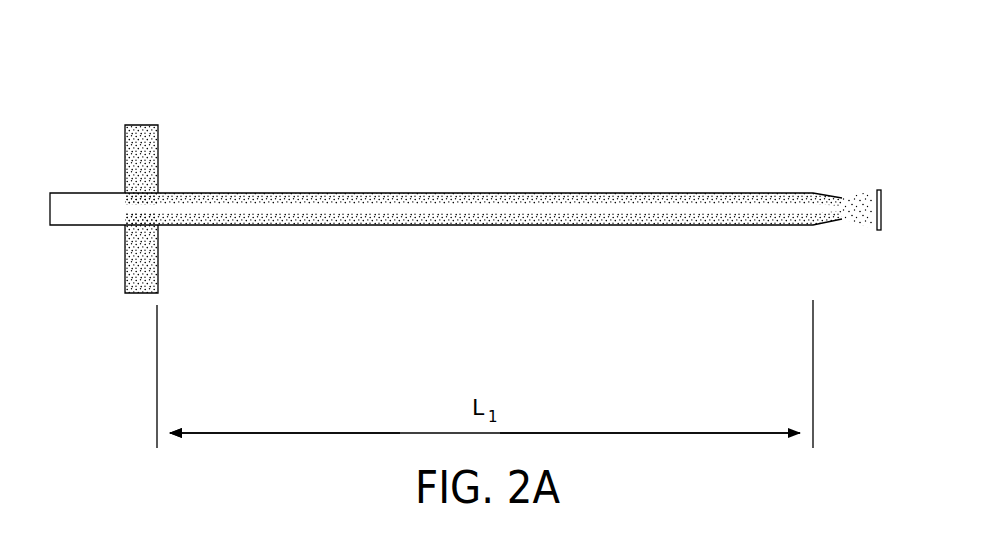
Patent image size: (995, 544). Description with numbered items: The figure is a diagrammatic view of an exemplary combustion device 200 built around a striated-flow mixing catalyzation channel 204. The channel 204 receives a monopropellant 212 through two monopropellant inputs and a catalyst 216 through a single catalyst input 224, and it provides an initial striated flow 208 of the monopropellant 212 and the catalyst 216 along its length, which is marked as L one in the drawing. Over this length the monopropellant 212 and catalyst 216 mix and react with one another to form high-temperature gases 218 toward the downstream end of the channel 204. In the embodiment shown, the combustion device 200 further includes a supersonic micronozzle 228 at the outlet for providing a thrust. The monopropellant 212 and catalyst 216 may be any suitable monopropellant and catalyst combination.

The combustion device 200 is at (751, 67).
The striated-flow mixing catalyzation channel 204 is at (409, 189).
The striated flow 208 is at (467, 211).
The monopropellant 212 is at (158, 140).
The catalyst 216 is at (50, 193).
The high-temperature gases 218 is at (792, 205).
The catalyst input 224 is at (117, 192).
The supersonic micronozzle 228 is at (846, 186).